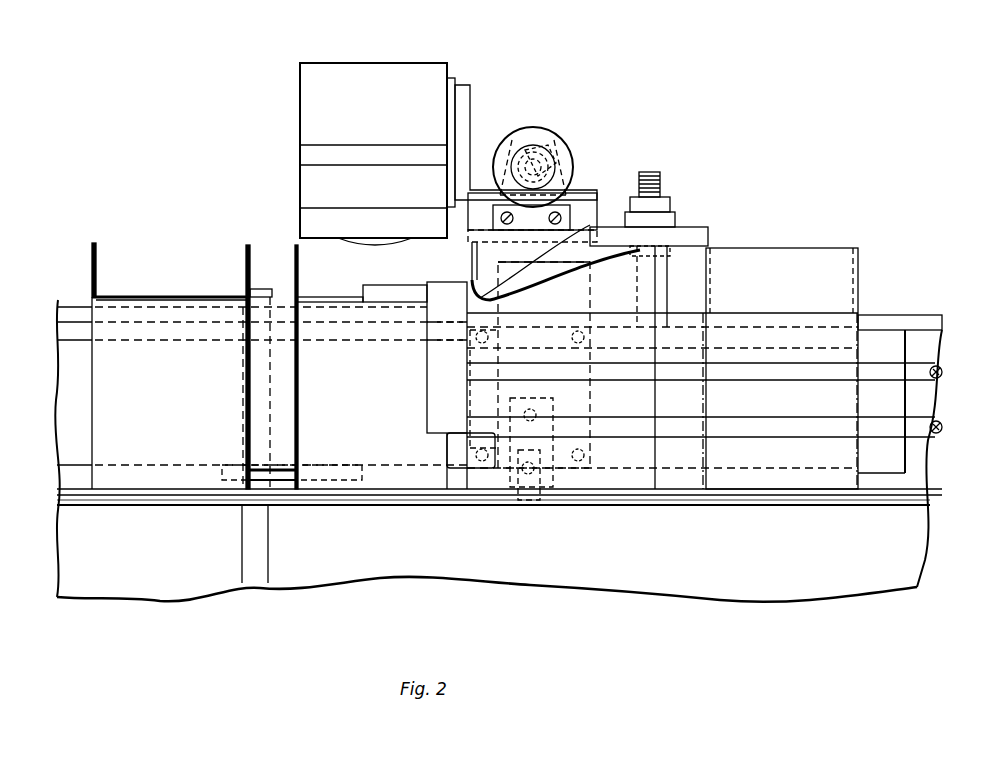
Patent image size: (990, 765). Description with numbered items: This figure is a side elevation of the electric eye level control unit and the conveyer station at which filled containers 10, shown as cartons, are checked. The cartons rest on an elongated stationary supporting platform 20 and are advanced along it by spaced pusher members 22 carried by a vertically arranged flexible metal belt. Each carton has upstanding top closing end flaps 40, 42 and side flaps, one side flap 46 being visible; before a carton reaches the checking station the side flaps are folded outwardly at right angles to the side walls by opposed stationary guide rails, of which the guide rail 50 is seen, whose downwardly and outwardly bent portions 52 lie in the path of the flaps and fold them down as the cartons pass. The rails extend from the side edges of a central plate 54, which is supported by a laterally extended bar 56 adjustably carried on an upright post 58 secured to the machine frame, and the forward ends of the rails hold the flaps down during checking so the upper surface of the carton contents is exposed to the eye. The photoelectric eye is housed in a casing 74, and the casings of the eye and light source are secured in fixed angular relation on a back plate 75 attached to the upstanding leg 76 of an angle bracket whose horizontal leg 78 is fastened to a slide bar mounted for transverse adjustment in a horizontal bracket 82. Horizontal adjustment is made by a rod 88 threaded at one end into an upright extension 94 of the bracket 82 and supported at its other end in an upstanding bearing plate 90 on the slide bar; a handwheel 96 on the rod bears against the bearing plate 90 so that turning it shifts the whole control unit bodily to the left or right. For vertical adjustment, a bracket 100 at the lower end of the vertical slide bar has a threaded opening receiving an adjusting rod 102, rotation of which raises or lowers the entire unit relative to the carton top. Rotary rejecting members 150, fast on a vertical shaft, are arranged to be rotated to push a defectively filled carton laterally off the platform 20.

The filled containers 10 is at (92, 380).
The stationary supporting platform 20 is at (160, 503).
The pusher members 22 is at (290, 404).
The end flap 40 is at (97, 262).
The end flap 42 is at (246, 262).
The side flap 46 is at (786, 250).
The stationary guide rail 50 is at (396, 285).
The downwardly and outwardly bent portions 52 is at (575, 268).
The central plate 54 is at (708, 232).
The laterally extended bar 56 is at (676, 212).
The upright post 58 is at (665, 178).
The casing 74 is at (355, 63).
The back plate 75 is at (452, 78).
The upstanding leg of angle bracket 76 is at (471, 104).
The horizontal leg of angle bracket 78 is at (598, 196).
The horizontal bracket 82 is at (598, 213).
The rod 88 is at (566, 160).
The upstanding bearing plate 90 is at (548, 205).
The upright extension 94 is at (513, 150).
The handwheel 96 is at (549, 131).
The bracket 100 is at (513, 490).
The adjusting rod 102 is at (536, 500).
The rotary members 150 is at (322, 297).